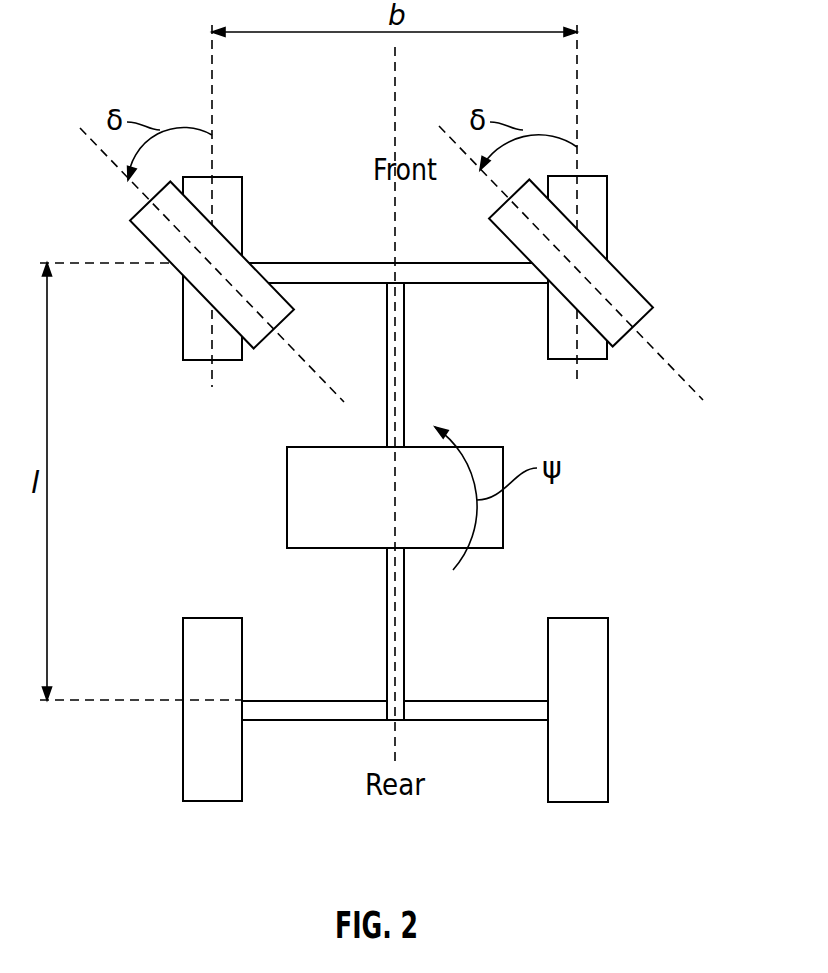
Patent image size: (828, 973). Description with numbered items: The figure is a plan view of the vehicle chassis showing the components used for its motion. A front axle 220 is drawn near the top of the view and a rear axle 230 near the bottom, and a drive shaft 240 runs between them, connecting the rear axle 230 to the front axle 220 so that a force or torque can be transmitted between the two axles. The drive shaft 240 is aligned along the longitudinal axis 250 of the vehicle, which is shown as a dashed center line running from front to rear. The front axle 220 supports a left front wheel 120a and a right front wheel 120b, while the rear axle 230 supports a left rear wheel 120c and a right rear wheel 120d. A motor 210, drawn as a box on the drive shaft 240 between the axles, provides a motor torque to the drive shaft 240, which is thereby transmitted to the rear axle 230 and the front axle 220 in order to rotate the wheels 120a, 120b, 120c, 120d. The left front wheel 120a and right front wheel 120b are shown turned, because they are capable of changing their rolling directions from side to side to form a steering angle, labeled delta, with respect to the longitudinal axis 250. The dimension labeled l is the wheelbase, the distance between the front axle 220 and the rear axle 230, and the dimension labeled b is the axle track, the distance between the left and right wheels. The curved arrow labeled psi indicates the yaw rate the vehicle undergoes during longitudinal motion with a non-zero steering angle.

The left front wheel 120a is at (183, 320).
The right front wheel 120b is at (607, 215).
The left rear wheel 120c is at (183, 660).
The right rear wheel 120d is at (608, 698).
The motor 210 is at (287, 500).
The front axle 220 is at (313, 262).
The rear axle 230 is at (295, 722).
The drive shaft 240 is at (404, 377).
The longitudinal axis 250 is at (397, 77).